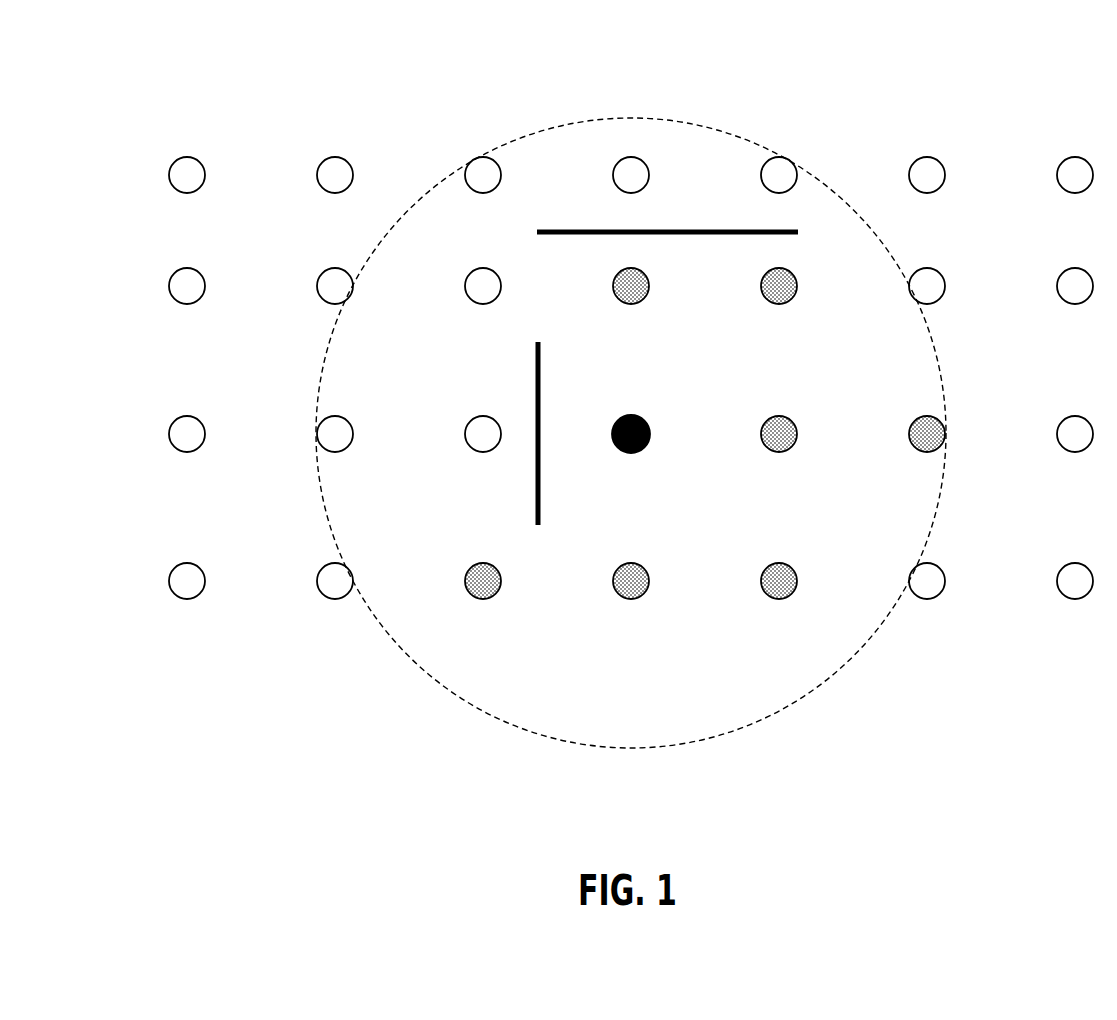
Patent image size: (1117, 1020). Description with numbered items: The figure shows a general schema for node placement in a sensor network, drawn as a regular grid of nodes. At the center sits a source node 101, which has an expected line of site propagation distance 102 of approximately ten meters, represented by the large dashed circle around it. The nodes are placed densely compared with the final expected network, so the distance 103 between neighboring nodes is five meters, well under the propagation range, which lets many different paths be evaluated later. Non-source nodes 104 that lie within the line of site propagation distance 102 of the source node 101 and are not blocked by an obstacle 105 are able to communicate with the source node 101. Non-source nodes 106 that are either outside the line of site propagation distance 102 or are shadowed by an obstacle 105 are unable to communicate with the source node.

The source node 101 is at (624, 452).
The line of site propagation distance 102 is at (643, 118).
The distance between nodes 103 is at (333, 192).
The non-source nodes 104 is at (645, 600).
The obstacle 105 is at (535, 497).
The non-source nodes 106 is at (330, 452).